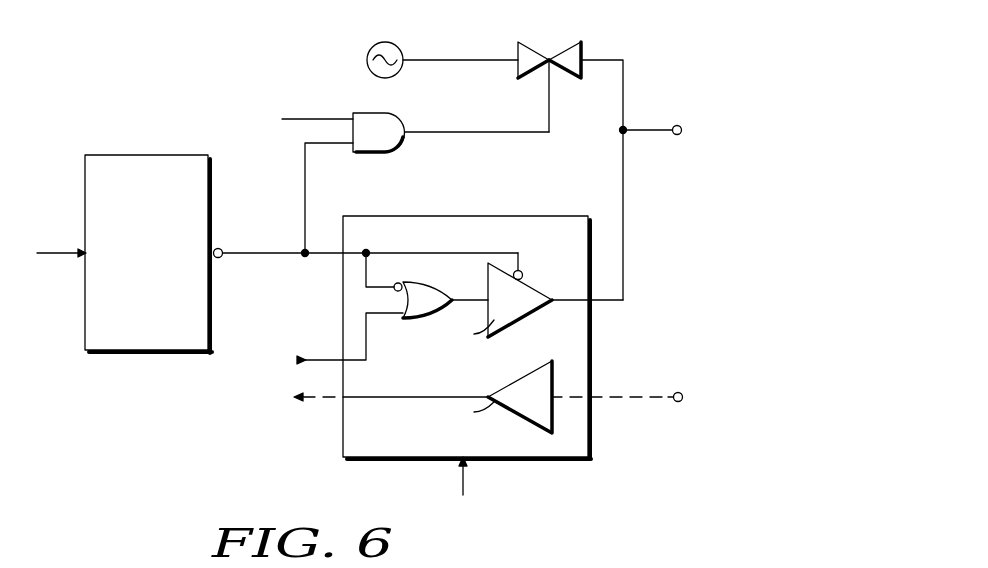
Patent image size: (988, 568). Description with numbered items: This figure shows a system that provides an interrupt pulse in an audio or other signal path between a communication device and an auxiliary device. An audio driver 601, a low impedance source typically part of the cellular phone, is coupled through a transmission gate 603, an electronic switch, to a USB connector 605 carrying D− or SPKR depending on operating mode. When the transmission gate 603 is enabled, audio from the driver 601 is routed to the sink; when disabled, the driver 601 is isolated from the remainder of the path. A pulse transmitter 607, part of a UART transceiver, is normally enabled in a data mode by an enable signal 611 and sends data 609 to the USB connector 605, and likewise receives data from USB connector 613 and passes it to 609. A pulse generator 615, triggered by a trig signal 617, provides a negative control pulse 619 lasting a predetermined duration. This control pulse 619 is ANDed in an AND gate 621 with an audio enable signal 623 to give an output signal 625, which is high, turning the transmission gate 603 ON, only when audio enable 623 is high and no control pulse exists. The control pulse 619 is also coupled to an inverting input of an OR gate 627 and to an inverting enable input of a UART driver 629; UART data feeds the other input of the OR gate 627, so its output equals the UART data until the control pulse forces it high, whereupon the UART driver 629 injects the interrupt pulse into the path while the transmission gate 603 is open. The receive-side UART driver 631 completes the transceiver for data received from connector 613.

The audio driver 601 is at (394, 45).
The transmission gate 603 is at (536, 42).
The USB connector (D−/SPKR/SPKR_L) 605 is at (674, 125).
The pulse transmitter 607 is at (480, 214).
The data 609 is at (266, 389).
The enable signal 611 is at (498, 505).
The USB connector (D+) 613 is at (673, 394).
The pulse generator 615 is at (120, 155).
The trig signal 617 is at (48, 221).
The control pulse 619 is at (257, 256).
The AND gate 621 is at (392, 113).
The audio enable signal 623 is at (251, 150).
The output signal 625 is at (462, 130).
The OR gate 627 is at (420, 287).
The UART driver 629 is at (531, 288).
The UART driver (R) 631 is at (533, 369).